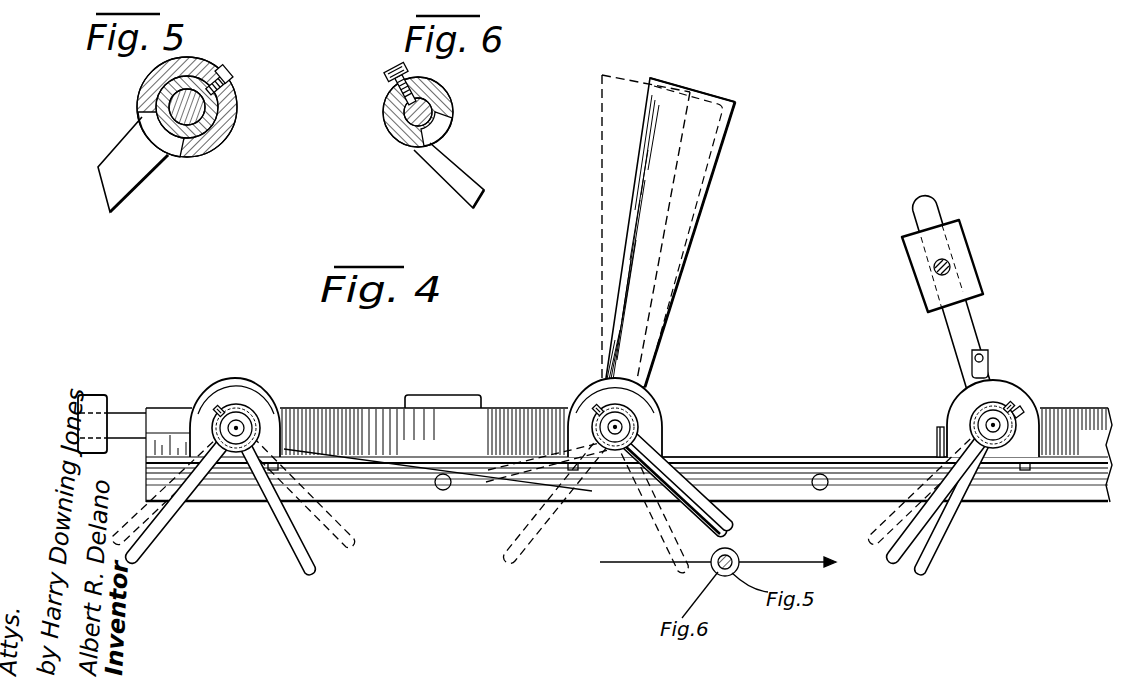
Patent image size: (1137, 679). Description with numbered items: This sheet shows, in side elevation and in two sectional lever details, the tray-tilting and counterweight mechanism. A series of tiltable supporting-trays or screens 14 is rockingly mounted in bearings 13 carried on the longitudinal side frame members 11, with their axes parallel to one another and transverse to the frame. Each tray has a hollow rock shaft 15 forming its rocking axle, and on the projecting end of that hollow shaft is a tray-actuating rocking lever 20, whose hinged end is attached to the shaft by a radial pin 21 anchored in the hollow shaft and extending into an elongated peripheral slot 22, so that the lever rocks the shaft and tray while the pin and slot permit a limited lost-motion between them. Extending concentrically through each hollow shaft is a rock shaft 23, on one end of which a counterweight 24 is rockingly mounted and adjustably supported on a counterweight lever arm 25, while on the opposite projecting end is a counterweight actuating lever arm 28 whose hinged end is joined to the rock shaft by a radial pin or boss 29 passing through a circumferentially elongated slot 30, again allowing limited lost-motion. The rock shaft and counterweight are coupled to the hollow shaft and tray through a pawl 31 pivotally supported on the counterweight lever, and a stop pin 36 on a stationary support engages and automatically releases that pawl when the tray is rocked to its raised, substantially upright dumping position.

In FIG. 4, the longitudinal side frame member 11 is at (765, 474).
In FIG. 4, the bearing 13 is at (262, 393).
In FIG. 4, the tiltable supporting-tray or screen 14 is at (700, 150).
In FIG. 5, the hollow rock shaft 15 is at (222, 118).
In FIG. 5, the tray-actuating rocking lever 20 is at (125, 158).
In FIG. 4, the tray-actuating rocking lever 20 is at (150, 540).
In FIG. 5, the radial pin 21 is at (214, 86).
In FIG. 5, the elongated peripheral slot 22 is at (228, 80).
In FIG. 5, the rock shaft 23 is at (184, 122).
In FIG. 6, the rock shaft 23 is at (425, 147).
In FIG. 4, the rock shaft 23 is at (252, 420).
In FIG. 4, the counterweight 24 is at (100, 396).
In FIG. 4, the counterweight lever arm 25 is at (128, 413).
In FIG. 6, the counterweight actuating lever arm 28 is at (455, 163).
In FIG. 4, the counterweight actuating lever arm 28 is at (287, 540).
In FIG. 6, the radial pin or boss 29 is at (393, 63).
In FIG. 4, the radial pin or boss 29 is at (218, 408).
In FIG. 4, the circumferentially elongated slot 30 is at (1022, 410).
In FIG. 4, the pawl 31 is at (232, 378).
In FIG. 4, the stop pin 36 is at (936, 436).